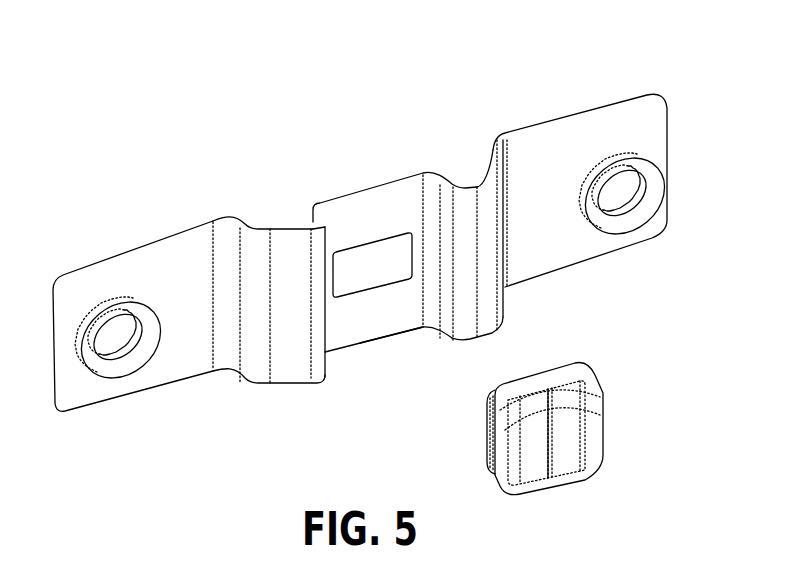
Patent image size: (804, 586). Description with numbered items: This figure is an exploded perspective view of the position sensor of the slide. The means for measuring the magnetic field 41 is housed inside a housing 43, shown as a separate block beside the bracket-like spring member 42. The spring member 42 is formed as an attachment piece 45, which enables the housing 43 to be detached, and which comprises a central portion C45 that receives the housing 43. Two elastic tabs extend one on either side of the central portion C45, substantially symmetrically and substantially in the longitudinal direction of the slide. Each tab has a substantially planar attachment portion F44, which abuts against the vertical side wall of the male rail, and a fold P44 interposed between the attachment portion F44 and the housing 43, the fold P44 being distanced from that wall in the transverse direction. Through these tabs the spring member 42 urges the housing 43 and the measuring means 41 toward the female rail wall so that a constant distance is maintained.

The spring member 42 is at (328, 140).
The attachment portion F44 is at (92, 227).
The fold P44 is at (268, 217).
The attachment piece 45 is at (345, 392).
The central portion C45 is at (408, 356).
The means for measuring the magnetic field 41 is at (546, 358).
The housing 43 is at (576, 462).